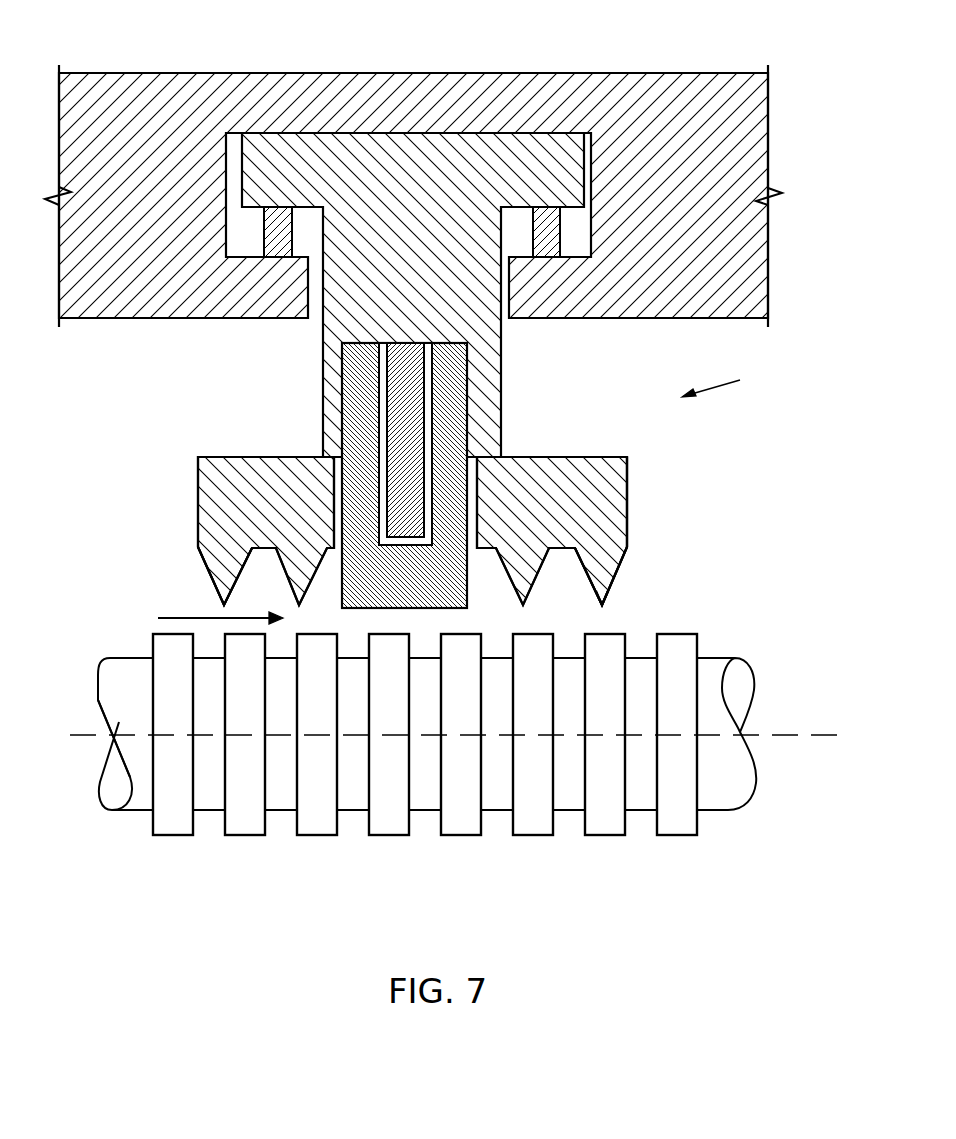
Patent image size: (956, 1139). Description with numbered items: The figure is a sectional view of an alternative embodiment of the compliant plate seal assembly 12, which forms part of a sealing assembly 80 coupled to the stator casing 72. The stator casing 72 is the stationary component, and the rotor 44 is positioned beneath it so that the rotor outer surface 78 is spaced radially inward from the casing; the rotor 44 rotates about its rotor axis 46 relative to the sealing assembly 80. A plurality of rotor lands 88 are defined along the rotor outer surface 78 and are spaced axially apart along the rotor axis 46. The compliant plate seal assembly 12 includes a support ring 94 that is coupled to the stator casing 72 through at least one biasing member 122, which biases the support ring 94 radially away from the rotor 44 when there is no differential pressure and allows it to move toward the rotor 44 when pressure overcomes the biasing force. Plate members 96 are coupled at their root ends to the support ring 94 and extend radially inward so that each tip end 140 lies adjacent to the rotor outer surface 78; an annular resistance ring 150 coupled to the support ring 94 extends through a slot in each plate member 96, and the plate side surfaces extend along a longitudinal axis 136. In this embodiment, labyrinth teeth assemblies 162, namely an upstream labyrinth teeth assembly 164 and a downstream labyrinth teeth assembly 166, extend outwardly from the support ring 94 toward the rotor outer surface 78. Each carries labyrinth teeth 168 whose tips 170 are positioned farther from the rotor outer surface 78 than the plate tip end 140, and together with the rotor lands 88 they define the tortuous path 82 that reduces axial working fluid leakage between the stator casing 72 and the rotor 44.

The compliant plate seal assembly 12 is at (724, 383).
The rotor 44 is at (414, 755).
The rotor axis 46 is at (783, 732).
The stator casing 72 is at (770, 138).
The rotor outer surface 78 is at (460, 752).
The sealing assembly 80 is at (450, 175).
The tortuous path 82 is at (176, 617).
The rotor land 88 is at (385, 836).
The support ring 94 is at (414, 379).
The plate member 96 is at (448, 487).
The biasing member 122 is at (547, 250).
The longitudinal axis 136 is at (78, 733).
The tip end 140 is at (411, 608).
The annular resistance ring 150 is at (417, 388).
The labyrinth teeth assembly 162 is at (627, 485).
The upstream labyrinth teeth assembly 164 is at (197, 493).
The downstream labyrinth teeth assembly 166 is at (627, 528).
The labyrinth teeth 168 is at (197, 552).
The tip 170 is at (603, 607).